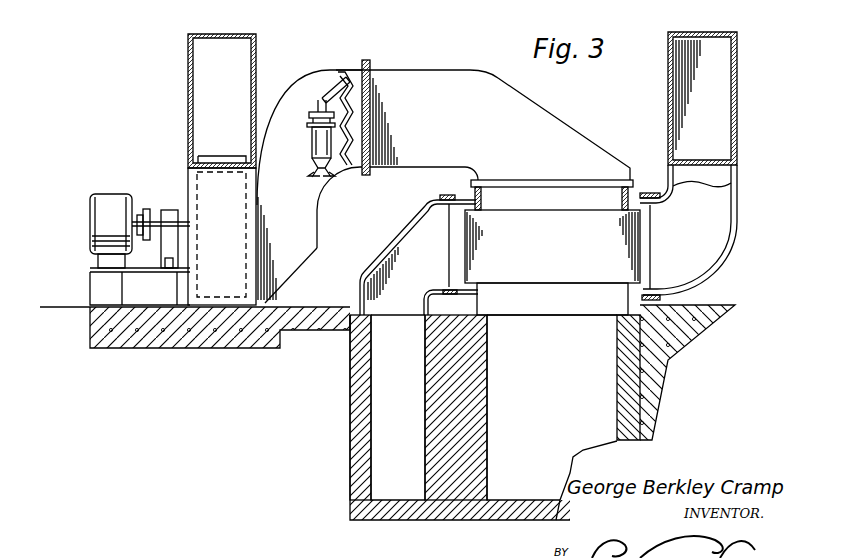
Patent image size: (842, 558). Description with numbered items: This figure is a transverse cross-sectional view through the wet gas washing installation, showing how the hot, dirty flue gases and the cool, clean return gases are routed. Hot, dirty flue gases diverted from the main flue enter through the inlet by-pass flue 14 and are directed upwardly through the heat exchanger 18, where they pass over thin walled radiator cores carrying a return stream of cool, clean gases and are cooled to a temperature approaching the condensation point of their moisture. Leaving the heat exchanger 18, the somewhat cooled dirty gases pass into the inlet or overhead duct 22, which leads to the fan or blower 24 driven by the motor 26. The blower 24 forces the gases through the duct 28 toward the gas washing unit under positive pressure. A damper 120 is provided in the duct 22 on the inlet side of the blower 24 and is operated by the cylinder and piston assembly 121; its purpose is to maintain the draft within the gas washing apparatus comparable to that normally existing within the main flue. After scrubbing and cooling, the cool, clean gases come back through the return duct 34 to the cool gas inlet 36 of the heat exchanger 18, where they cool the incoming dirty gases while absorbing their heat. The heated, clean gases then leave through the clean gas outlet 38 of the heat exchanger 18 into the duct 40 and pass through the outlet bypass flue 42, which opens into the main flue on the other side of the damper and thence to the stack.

The inlet by-pass flue 14 is at (481, 427).
The heat exchanger 18 is at (561, 200).
The inlet or overhead duct 22 is at (432, 68).
The fan or blower 24 is at (188, 197).
The motor 26 is at (108, 192).
The duct 28 is at (258, 75).
The return duct 34 is at (737, 148).
The cool gas inlet 36 is at (637, 197).
The clean gas outlet 38 is at (466, 200).
The duct 40 is at (394, 243).
The outlet bypass flue 42 is at (363, 471).
The damper 120 is at (353, 64).
The cylinder and piston assembly 121 is at (318, 152).